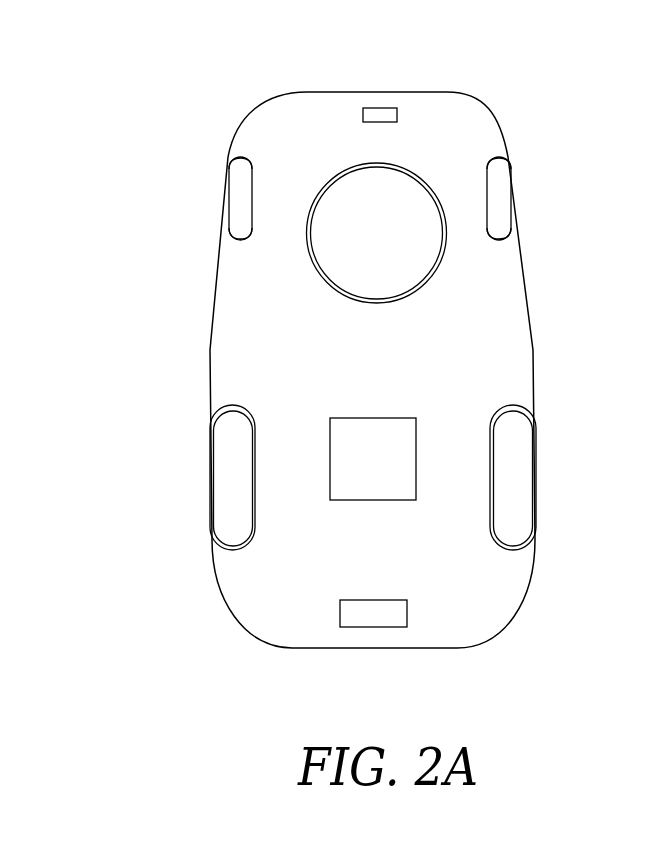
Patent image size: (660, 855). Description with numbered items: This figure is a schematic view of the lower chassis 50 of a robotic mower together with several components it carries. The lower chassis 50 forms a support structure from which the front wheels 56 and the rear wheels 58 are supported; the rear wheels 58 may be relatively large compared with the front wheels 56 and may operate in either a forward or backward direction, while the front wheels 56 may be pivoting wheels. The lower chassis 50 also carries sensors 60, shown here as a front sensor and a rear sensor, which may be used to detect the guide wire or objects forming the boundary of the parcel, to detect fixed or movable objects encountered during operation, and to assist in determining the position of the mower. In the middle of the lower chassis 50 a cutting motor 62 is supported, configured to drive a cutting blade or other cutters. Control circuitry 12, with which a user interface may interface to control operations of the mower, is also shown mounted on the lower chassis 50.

The control circuitry 12 is at (391, 438).
The lower chassis 50 is at (231, 353).
The front wheels 56 is at (237, 202).
The rear wheels 58 is at (222, 483).
The sensors 60 is at (368, 112).
The cutting motor 62 is at (387, 213).